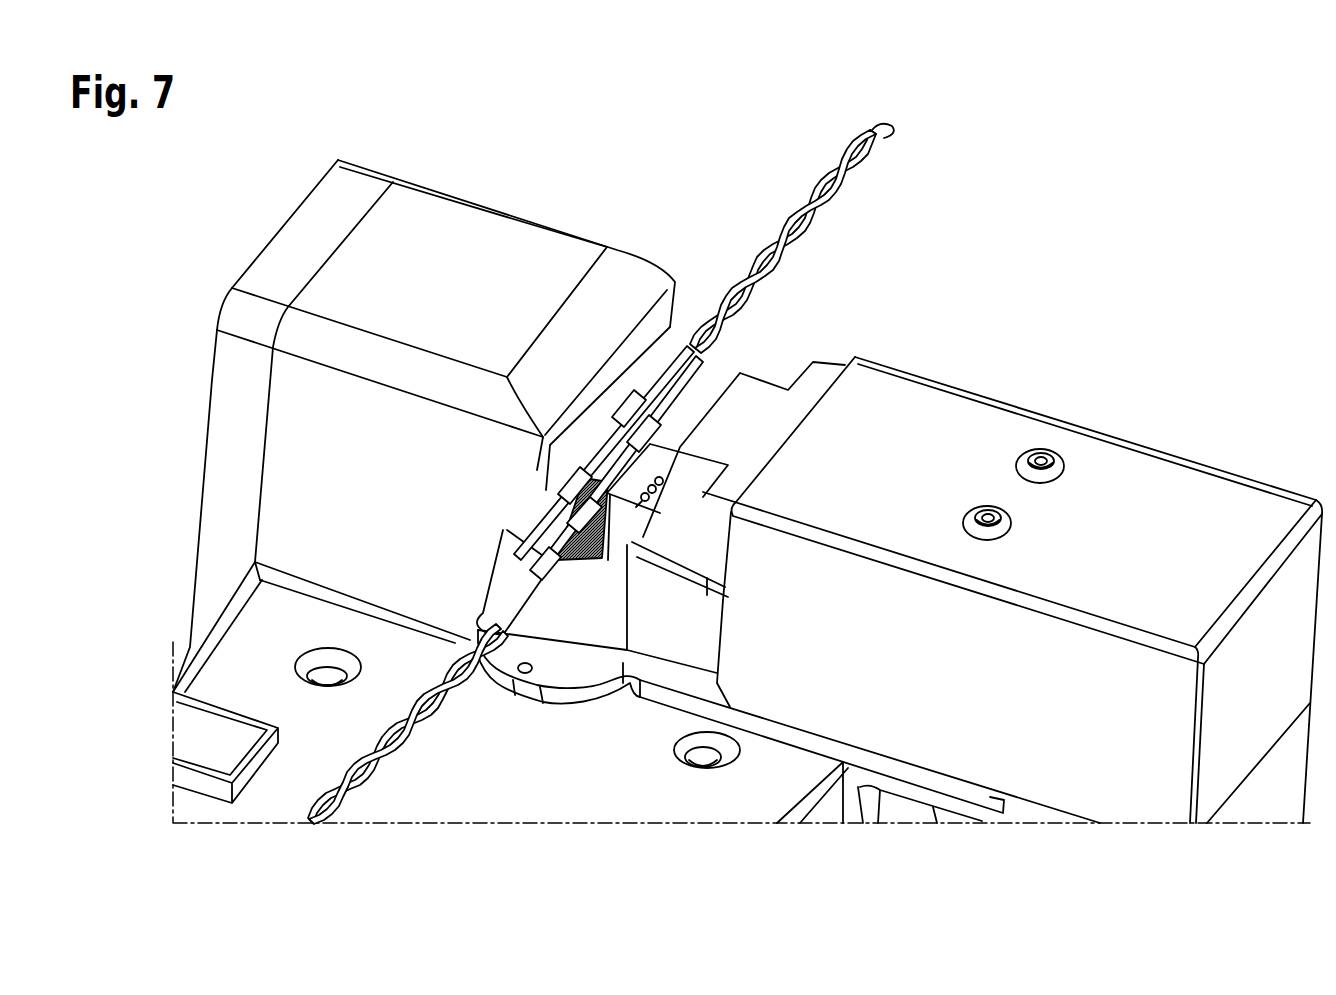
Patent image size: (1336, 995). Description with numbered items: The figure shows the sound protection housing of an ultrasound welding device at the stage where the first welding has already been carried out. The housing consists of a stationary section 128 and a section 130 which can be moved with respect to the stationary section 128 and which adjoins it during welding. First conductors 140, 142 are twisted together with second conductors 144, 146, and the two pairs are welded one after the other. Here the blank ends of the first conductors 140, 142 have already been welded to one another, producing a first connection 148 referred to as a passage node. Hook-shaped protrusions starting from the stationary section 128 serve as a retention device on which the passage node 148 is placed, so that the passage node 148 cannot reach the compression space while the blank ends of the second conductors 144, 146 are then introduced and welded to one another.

The stationary section 128 is at (484, 228).
The movable section 130 is at (822, 378).
The first conductor 140 is at (396, 719).
The first conductor 142 is at (867, 134).
The second conductor 144 is at (400, 740).
The second conductor 146 is at (868, 167).
The first connection (passage node) 148 is at (611, 389).